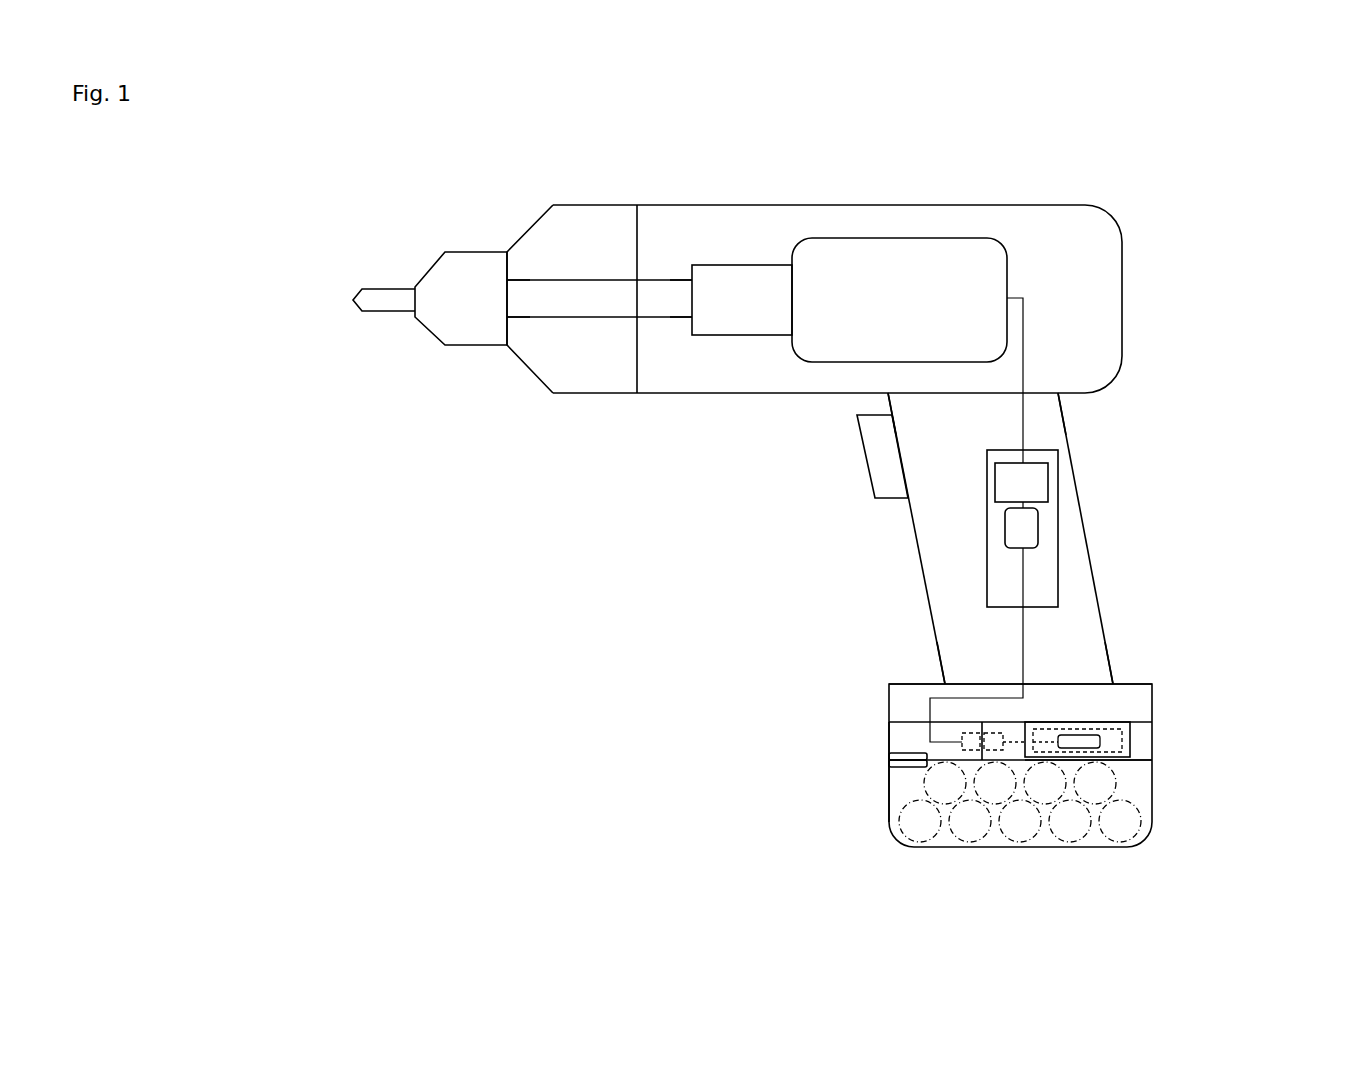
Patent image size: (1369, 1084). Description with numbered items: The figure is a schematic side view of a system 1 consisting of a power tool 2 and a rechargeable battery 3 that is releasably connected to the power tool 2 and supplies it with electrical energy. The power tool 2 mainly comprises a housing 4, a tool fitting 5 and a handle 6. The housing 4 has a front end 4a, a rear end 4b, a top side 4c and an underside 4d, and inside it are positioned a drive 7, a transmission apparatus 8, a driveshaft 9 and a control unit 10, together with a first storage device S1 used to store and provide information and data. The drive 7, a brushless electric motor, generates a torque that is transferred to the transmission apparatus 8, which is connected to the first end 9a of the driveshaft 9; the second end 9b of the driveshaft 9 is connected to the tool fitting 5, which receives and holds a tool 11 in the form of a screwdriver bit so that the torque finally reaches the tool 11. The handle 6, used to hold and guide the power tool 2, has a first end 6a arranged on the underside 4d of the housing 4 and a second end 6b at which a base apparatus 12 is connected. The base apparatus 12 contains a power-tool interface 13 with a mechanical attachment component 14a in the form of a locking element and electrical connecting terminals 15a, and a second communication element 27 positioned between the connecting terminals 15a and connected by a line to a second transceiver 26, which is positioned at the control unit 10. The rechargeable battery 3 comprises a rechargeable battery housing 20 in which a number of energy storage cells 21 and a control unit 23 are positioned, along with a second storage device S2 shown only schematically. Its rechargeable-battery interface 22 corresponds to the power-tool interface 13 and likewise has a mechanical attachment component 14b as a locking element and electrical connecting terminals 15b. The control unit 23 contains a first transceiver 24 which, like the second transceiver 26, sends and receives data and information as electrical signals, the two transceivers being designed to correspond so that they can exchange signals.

The system 1 is at (1235, 205).
The power tool 2 is at (590, 190).
The rechargeable battery 3 is at (1187, 842).
The housing 4 is at (1033, 225).
The front end 4a is at (525, 253).
The rear end 4b is at (1097, 302).
The top side 4c is at (775, 218).
The underside 4d is at (787, 382).
The tool fitting 5 is at (437, 320).
The handle 6 is at (940, 552).
The first end 6a is at (1043, 403).
The second end 6b is at (1083, 672).
The drive 7 is at (877, 278).
The transmission apparatus 8 is at (733, 282).
The driveshaft 9 is at (588, 303).
The first end 9a is at (683, 305).
The second end 9b is at (512, 307).
The control unit 10 is at (1045, 596).
The tool 11 is at (370, 298).
The base apparatus 12 is at (1130, 698).
The power-tool interface 13 is at (897, 738).
The mechanical attachment component 14a is at (887, 755).
The mechanical attachment component 14b is at (887, 763).
The electrical connecting terminals 15a is at (965, 738).
The electrical connecting terminals 15b is at (996, 738).
The rechargeable battery housing 20 is at (908, 793).
The energy storage cells 21 is at (967, 822).
The rechargeable-battery interface 22 is at (1128, 752).
The control unit 23 is at (1133, 752).
The first transceiver 24 is at (1085, 740).
The second transceiver 26 is at (877, 452).
The second communication element 27 is at (1070, 707).
The first storage device S1 is at (1112, 741).
The second storage device S2 is at (1035, 483).